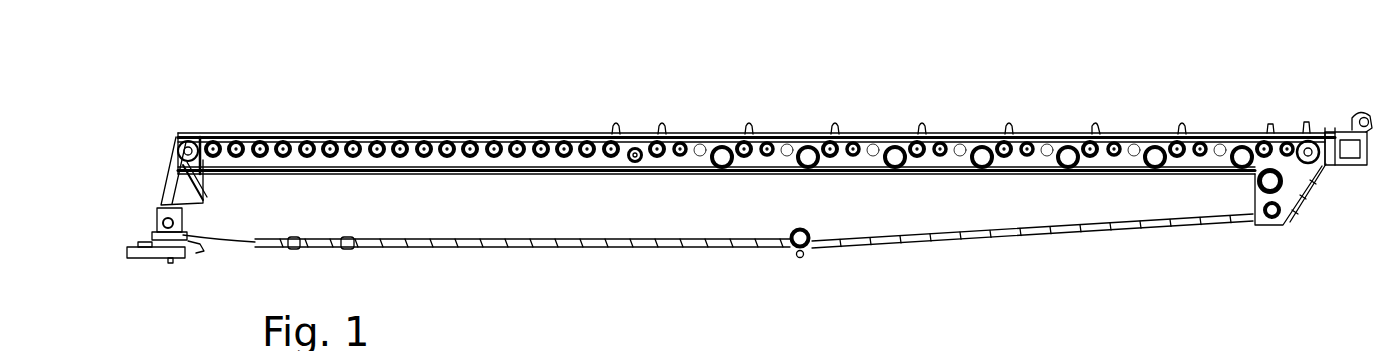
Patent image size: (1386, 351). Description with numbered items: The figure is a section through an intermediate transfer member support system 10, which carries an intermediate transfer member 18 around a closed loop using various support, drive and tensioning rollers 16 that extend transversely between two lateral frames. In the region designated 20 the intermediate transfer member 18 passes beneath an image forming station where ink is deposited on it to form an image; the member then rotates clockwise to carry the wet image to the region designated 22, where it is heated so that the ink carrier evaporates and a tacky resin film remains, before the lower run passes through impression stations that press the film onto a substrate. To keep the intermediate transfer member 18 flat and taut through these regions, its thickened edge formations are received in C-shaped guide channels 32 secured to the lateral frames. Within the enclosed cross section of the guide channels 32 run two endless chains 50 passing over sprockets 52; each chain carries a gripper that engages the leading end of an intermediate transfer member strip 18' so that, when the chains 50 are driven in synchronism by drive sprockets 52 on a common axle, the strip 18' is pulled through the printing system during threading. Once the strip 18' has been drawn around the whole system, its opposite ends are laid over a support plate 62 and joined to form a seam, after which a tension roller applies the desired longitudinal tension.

The intermediate transfer member support system 10 is at (1122, 254).
The support, drive and tensioning rollers 16 is at (416, 160).
The intermediate transfer member 18 is at (165, 164).
The intermediate transfer member strip 18' is at (1279, 257).
The region beneath the image forming station 20 is at (620, 78).
The heating region 22 is at (1268, 78).
The C-shaped guide channels 32 is at (547, 248).
The chains 50 is at (1259, 216).
The sprockets 52 is at (1258, 205).
The support plate 62 is at (192, 172).